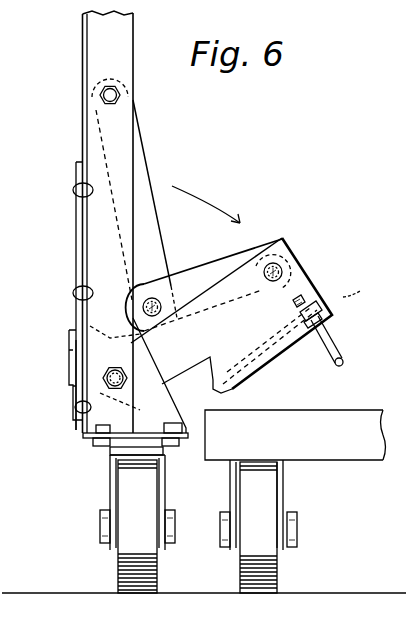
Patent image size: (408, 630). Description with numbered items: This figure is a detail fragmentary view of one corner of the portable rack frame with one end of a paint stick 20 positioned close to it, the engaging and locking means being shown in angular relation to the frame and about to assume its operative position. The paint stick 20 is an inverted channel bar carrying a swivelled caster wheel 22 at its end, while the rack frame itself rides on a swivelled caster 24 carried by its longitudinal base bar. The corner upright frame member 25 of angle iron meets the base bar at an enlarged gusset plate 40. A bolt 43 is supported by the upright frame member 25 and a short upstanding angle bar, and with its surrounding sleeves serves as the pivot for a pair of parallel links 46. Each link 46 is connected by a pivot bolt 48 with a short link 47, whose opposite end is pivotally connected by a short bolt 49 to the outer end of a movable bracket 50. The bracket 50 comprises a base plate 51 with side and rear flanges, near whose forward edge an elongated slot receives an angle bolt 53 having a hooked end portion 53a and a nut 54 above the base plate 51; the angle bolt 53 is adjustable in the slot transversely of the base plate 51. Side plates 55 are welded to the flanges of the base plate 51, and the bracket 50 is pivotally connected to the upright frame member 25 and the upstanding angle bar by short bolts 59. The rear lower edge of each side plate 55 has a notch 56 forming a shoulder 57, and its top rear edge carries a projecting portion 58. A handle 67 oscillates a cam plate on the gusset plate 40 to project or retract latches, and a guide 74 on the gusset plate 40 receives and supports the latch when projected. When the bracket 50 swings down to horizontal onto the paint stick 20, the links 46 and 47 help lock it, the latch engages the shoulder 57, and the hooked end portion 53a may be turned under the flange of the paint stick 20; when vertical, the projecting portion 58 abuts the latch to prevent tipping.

The paint stick 20 is at (347, 417).
The swivelled caster wheel 22 is at (262, 510).
The swivelled caster 24 is at (130, 527).
The upright frame member 25 is at (128, 33).
The gusset plate 40 is at (80, 224).
The bolt 43 is at (120, 95).
The parallel link 46 is at (144, 182).
The short link 47 is at (216, 272).
The pivot bolt 48 is at (157, 300).
The short bolt 49 is at (279, 264).
The movable bracket 50 is at (305, 270).
The base plate 51 is at (222, 392).
The angle bolt 53 is at (333, 335).
The hooked end portion 53a is at (345, 360).
The nut 54 is at (326, 305).
The side plate 55 is at (318, 287).
The notch 56 is at (108, 449).
The shoulder 57 is at (82, 427).
The projecting portion 58 is at (92, 330).
The short bolt 59 is at (103, 374).
The handle 67 is at (70, 345).
The guide 74 is at (76, 407).